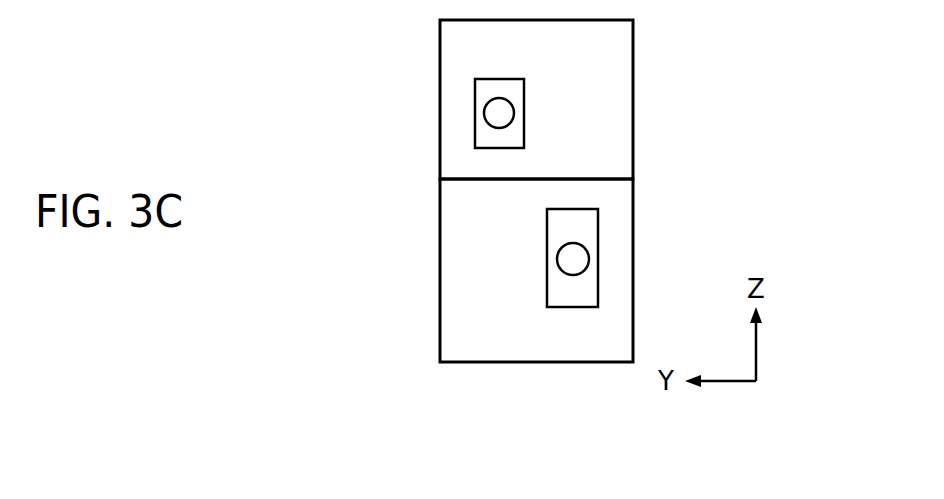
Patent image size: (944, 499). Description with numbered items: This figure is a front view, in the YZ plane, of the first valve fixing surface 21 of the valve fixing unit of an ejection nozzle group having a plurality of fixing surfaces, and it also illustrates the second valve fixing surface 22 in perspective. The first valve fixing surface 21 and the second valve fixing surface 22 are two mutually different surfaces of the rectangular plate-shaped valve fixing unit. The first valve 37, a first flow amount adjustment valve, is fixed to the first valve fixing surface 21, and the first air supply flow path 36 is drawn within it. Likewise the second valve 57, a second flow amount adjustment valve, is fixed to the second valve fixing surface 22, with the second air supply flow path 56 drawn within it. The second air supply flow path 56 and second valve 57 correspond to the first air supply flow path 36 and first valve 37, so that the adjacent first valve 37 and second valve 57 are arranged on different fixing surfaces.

The first valve fixing surface 21 is at (475, 307).
The second valve fixing surface 22 is at (603, 130).
The first air supply flow path 36 is at (577, 260).
The first valve 37 is at (583, 221).
The second air supply flow path 56 is at (498, 114).
The second valve 57 is at (488, 89).